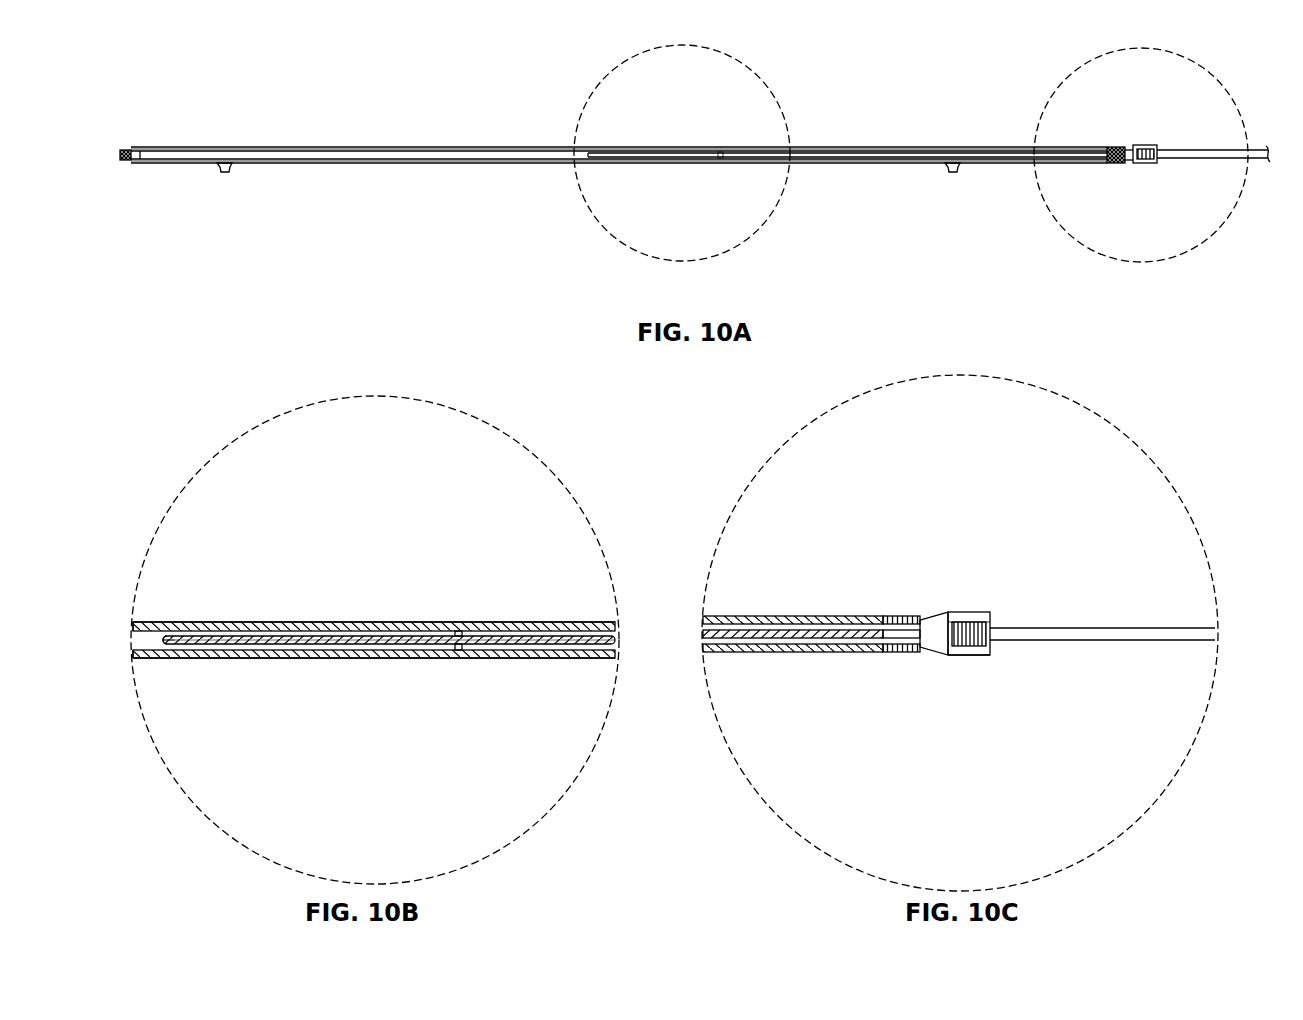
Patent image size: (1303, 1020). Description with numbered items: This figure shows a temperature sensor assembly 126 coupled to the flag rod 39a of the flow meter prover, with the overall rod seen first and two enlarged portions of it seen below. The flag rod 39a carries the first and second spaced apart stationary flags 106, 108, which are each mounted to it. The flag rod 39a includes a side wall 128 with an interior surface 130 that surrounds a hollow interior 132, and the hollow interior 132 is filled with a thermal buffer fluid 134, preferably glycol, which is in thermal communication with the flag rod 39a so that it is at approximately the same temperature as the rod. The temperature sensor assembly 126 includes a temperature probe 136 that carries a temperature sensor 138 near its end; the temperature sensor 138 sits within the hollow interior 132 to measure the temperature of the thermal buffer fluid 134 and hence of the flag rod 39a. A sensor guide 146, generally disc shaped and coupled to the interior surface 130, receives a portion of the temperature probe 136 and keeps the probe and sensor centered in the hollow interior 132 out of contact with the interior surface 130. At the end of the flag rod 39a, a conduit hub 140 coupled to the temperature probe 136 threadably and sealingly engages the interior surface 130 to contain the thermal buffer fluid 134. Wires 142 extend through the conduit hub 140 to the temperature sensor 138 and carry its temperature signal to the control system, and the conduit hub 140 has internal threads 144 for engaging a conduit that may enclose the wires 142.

In FIG. 10A, the flag rod 39a is at (385, 146).
In FIG. 10B, the flag rod 39a is at (498, 622).
In FIG. 10C, the flag rod 39a is at (757, 616).
In FIG. 10A, the stationary flag 106 is at (953, 172).
In FIG. 10A, the stationary flag 108 is at (225, 172).
In FIG. 10A, the temperature sensor assembly 126 is at (1141, 131).
In FIG. 10B, the temperature sensor assembly 126 is at (349, 626).
In FIG. 10C, the temperature sensor assembly 126 is at (977, 603).
In FIG. 10B, the side wall 128 is at (245, 622).
In FIG. 10B, the interior surface 130 is at (163, 632).
In FIG. 10B, the hollow interior 132 is at (150, 645).
In FIG. 10B, the thermal buffer fluid 134 is at (140, 640).
In FIG. 10B, the temperature probe 136 is at (550, 640).
In FIG. 10C, the temperature probe 136 is at (822, 630).
In FIG. 10B, the temperature sensor 138 is at (173, 637).
In FIG. 10C, the conduit hub 140 is at (985, 655).
In FIG. 10A, the wires 142 is at (1222, 148).
In FIG. 10C, the wires 142 is at (1112, 628).
In FIG. 10C, the internal threads 144 is at (990, 624).
In FIG. 10B, the sensor guide 146 is at (460, 655).